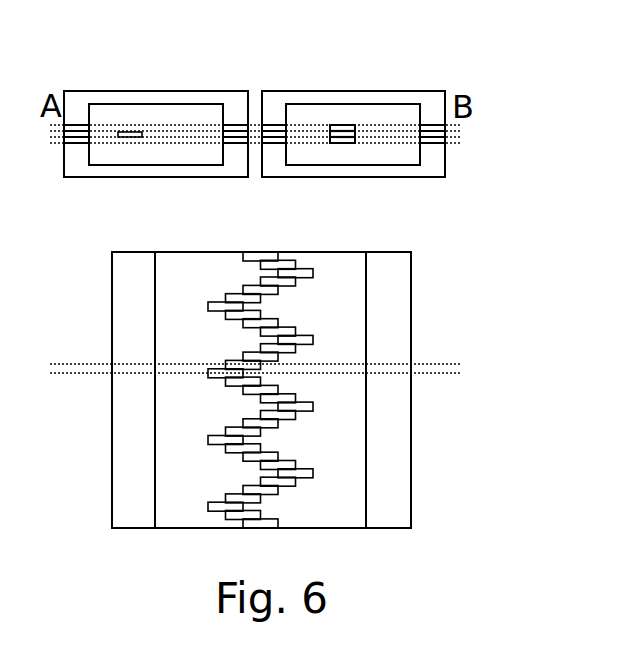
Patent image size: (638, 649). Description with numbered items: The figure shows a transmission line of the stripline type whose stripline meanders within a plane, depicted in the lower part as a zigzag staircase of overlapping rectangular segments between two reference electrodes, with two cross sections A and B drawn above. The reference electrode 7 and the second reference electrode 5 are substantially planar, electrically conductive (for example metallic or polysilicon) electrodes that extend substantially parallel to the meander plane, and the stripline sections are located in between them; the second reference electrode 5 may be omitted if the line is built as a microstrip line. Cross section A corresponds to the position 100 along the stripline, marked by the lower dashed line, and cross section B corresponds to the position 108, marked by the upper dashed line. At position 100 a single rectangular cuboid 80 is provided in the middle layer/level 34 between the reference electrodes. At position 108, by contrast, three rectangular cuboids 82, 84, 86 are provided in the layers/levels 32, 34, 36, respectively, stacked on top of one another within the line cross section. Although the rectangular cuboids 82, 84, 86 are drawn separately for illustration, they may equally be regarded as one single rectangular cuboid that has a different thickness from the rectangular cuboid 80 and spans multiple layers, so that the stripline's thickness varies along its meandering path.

The second reference electrode 5 is at (246, 92).
The reference electrode 7 is at (138, 175).
The layer/level 32 is at (167, 136).
The layer/level 34 is at (185, 131).
The layer/level 36 is at (204, 125).
The rectangular cuboid 80 is at (124, 124).
The rectangular cuboid 82 is at (356, 143).
The rectangular cuboid 84 is at (357, 138).
The rectangular cuboid 86 is at (357, 125).
The position along the stripline 100 is at (70, 374).
The position along the stripline 108 is at (80, 363).